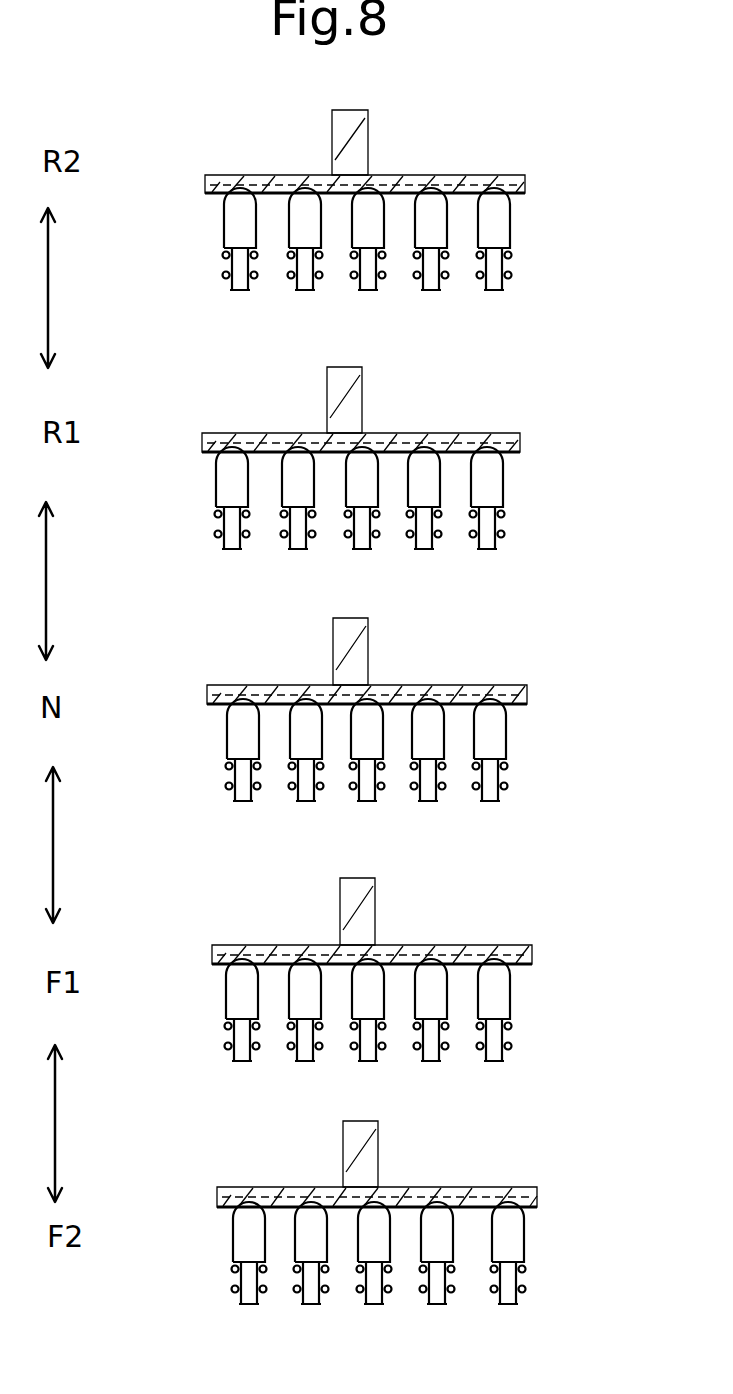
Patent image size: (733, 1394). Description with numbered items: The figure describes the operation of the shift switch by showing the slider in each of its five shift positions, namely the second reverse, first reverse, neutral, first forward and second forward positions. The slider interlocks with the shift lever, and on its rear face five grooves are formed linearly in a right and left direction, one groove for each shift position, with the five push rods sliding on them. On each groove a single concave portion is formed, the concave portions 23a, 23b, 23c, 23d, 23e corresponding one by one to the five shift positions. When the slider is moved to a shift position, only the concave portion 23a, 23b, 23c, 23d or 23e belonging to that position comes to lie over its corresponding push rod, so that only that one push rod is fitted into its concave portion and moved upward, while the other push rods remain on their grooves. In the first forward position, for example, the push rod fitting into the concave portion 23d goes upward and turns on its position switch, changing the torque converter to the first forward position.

The concave portion 23a is at (215, 203).
The concave portion 23b is at (283, 437).
The concave portion 23c is at (382, 690).
The concave portion 23d is at (444, 950).
The concave portion 23e is at (537, 1212).